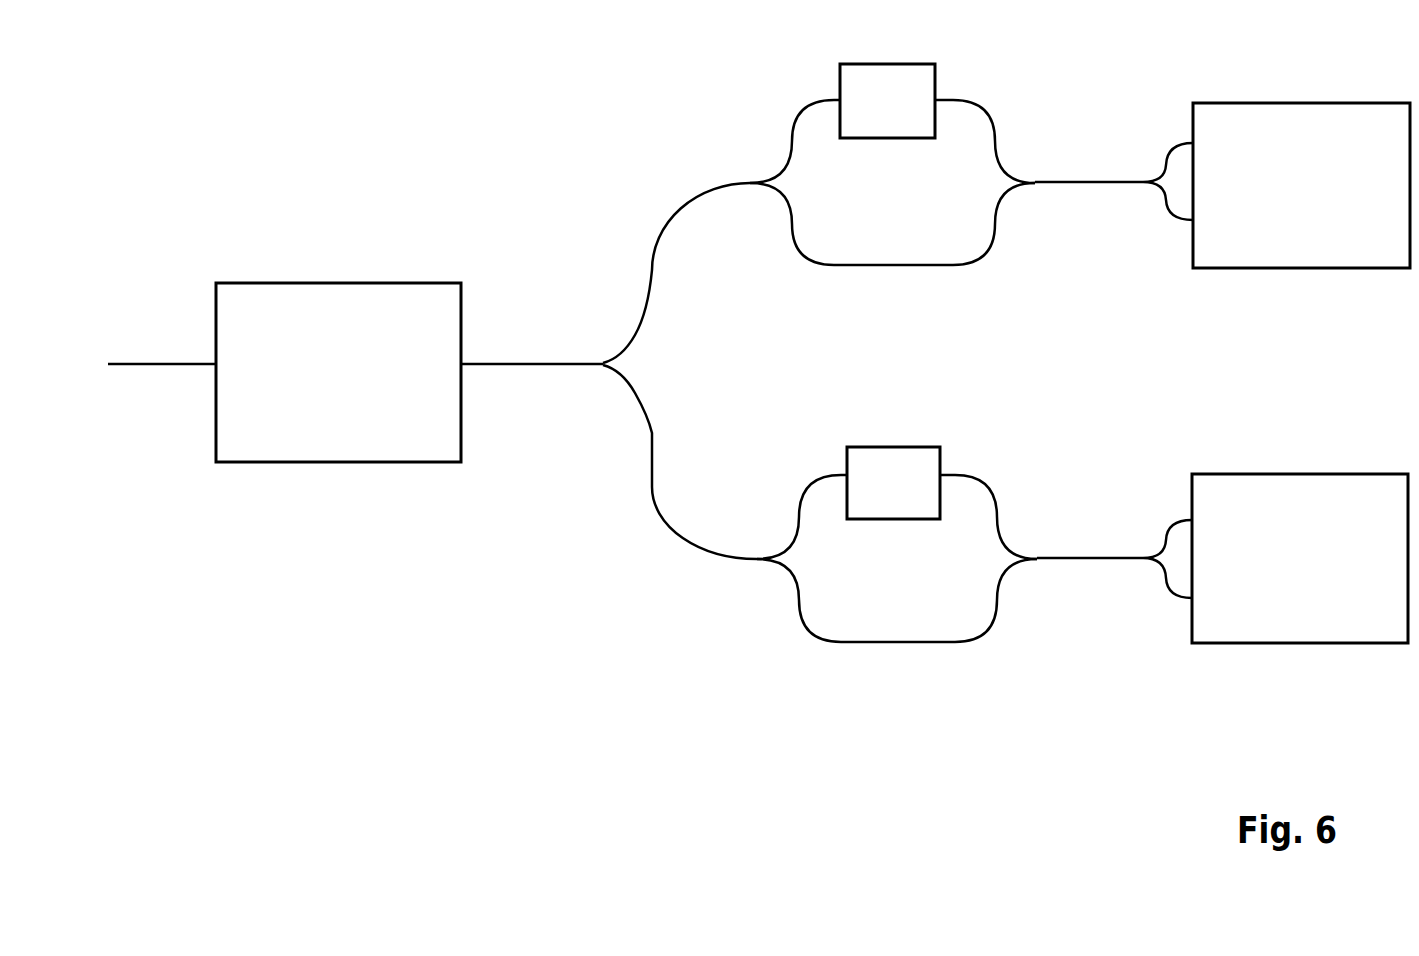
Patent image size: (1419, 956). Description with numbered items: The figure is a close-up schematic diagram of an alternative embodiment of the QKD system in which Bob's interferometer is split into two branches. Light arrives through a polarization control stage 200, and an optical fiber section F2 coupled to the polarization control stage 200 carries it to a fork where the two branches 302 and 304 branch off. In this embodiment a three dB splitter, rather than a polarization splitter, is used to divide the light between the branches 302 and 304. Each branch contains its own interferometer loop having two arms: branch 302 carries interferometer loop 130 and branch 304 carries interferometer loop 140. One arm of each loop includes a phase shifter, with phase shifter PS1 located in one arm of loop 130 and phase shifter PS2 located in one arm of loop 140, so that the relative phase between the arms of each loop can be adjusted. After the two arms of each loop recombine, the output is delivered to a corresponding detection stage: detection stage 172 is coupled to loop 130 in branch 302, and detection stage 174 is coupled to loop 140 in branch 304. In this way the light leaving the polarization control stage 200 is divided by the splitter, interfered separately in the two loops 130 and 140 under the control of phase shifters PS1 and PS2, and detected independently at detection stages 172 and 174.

The polarization control stage 200 is at (365, 390).
The optical fiber section F2 is at (552, 365).
The branch 302 is at (650, 270).
The branch 304 is at (650, 475).
The interferometer loop 140 is at (838, 164).
The interferometer loop 130 is at (831, 576).
The phase shifter PS2 is at (917, 110).
The phase shifter PS1 is at (923, 492).
The detection stage 174 is at (1328, 203).
The detection stage 172 is at (1327, 565).